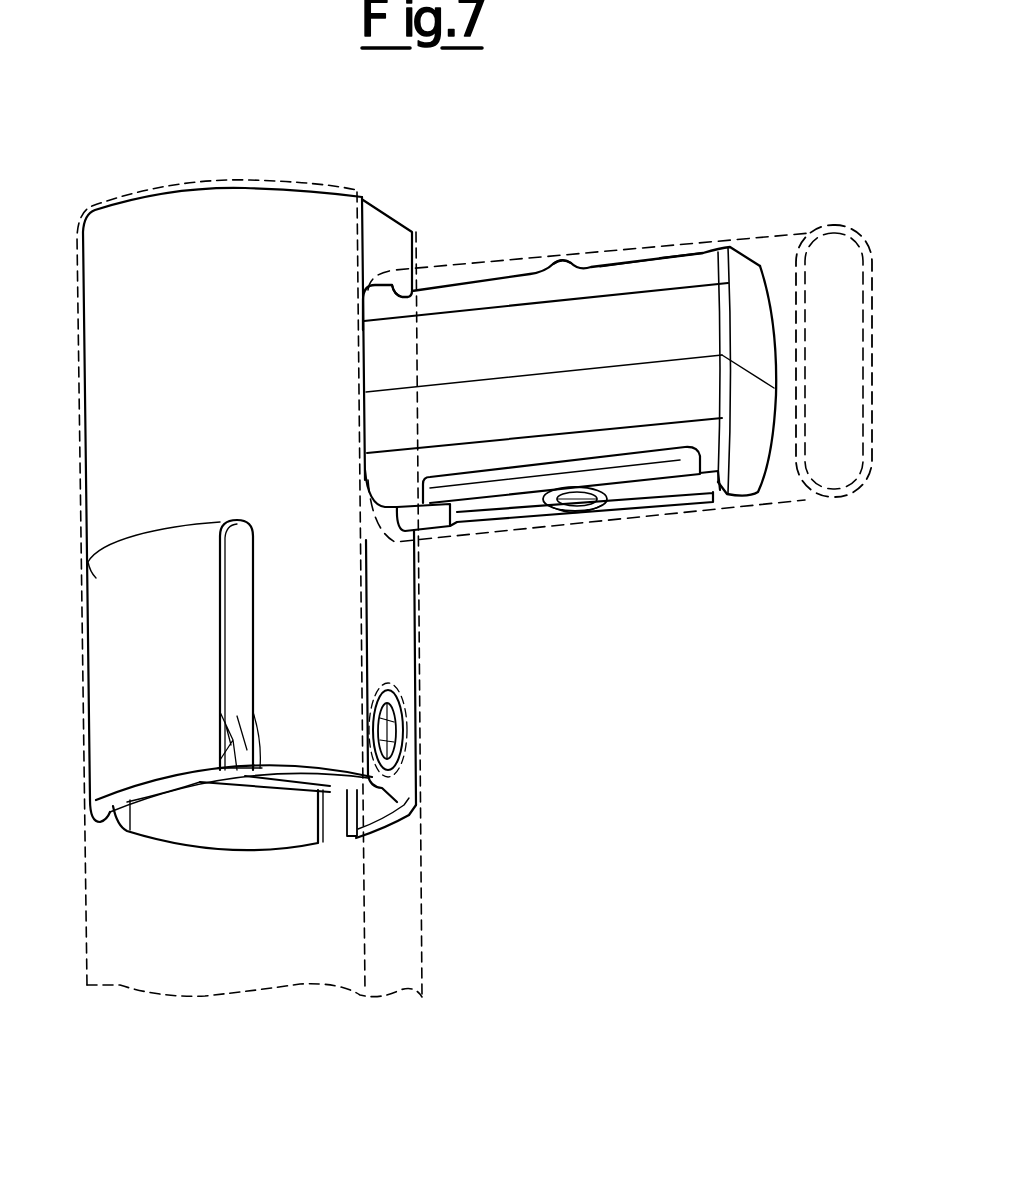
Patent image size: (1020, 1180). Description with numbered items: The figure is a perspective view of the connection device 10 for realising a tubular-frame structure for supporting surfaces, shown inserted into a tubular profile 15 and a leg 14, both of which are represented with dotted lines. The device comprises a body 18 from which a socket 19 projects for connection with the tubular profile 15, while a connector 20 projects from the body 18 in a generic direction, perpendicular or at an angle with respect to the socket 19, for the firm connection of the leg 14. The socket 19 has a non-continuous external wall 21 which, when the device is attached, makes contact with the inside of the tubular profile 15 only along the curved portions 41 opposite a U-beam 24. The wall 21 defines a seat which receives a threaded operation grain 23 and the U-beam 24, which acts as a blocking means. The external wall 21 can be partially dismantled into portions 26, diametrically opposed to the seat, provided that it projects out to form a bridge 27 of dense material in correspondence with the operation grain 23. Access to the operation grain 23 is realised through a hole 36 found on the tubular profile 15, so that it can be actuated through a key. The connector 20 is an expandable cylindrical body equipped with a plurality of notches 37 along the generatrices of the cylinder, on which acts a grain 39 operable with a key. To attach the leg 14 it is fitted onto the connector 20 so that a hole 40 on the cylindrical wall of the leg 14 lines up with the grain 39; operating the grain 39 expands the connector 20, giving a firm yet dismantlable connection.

The connection device 10 is at (534, 126).
The leg 14 is at (414, 930).
The tubular profile 15 is at (803, 498).
The body 18 is at (140, 226).
The socket 19 is at (760, 266).
The connector 20 is at (125, 685).
The external wall 21 is at (447, 340).
The operation grain 23 is at (580, 508).
The U-beam 24 is at (678, 500).
The portions 26 is at (505, 278).
The bridge 27 is at (560, 264).
The hole 36 is at (558, 522).
The notches 37 is at (222, 597).
The grain 39 is at (392, 736).
The hole 40 is at (396, 692).
The curved portions 41 is at (626, 283).